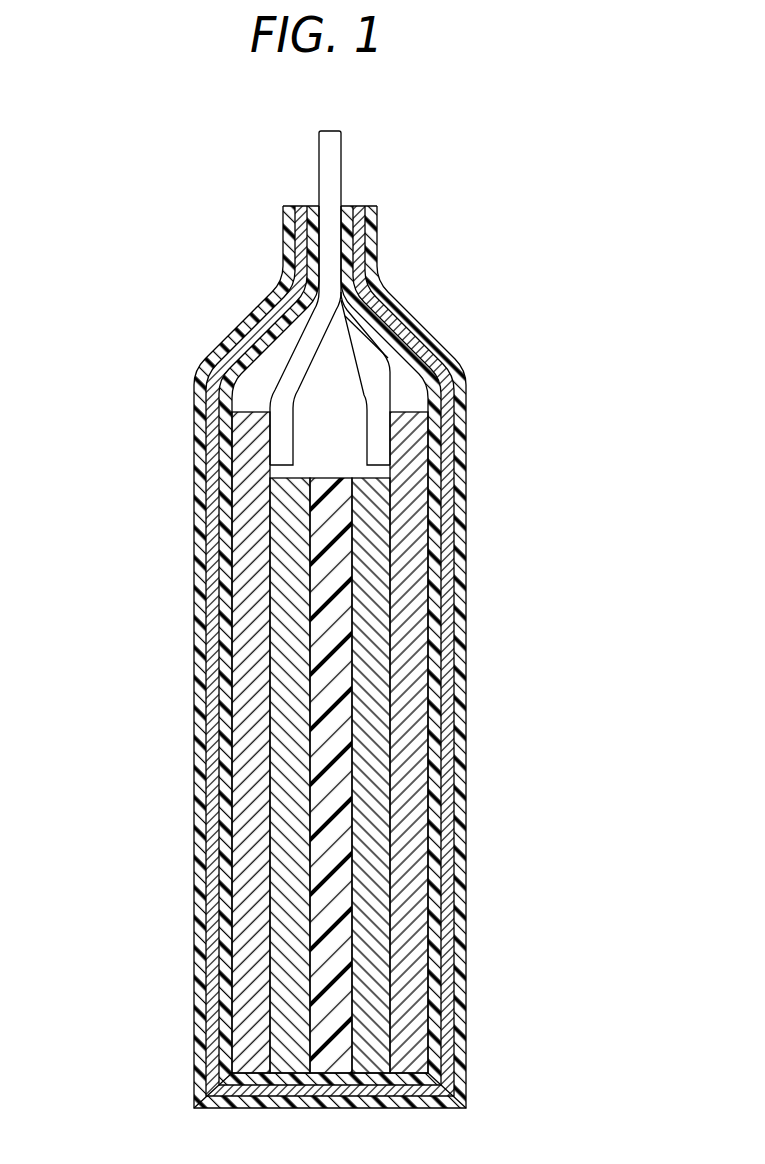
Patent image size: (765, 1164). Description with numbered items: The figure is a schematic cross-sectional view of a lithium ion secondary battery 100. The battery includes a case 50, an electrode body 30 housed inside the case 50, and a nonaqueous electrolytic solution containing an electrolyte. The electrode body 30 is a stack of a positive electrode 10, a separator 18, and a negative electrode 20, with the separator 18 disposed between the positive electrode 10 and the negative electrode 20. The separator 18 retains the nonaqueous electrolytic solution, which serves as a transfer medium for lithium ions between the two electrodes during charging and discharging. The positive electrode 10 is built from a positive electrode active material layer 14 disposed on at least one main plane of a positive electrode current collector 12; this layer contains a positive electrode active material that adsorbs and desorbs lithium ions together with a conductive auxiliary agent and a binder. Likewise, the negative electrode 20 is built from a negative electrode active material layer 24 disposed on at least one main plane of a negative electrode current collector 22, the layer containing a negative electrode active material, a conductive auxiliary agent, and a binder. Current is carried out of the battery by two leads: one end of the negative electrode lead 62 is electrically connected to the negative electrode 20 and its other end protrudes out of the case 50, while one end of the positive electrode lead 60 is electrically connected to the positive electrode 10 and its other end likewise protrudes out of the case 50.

The lithium ion secondary battery 100 is at (532, 158).
The case 50 is at (468, 702).
The electrode body 30 is at (80, 587).
The positive electrode 10 is at (127, 570).
The positive electrode current collector 12 is at (405, 572).
The positive electrode active material layer 14 is at (372, 612).
The separator 18 is at (330, 652).
The negative electrode 20 is at (127, 668).
The negative electrode current collector 22 is at (250, 722).
The negative electrode active material layer 24 is at (290, 690).
The positive electrode lead 60 is at (357, 352).
The negative electrode lead 62 is at (300, 355).